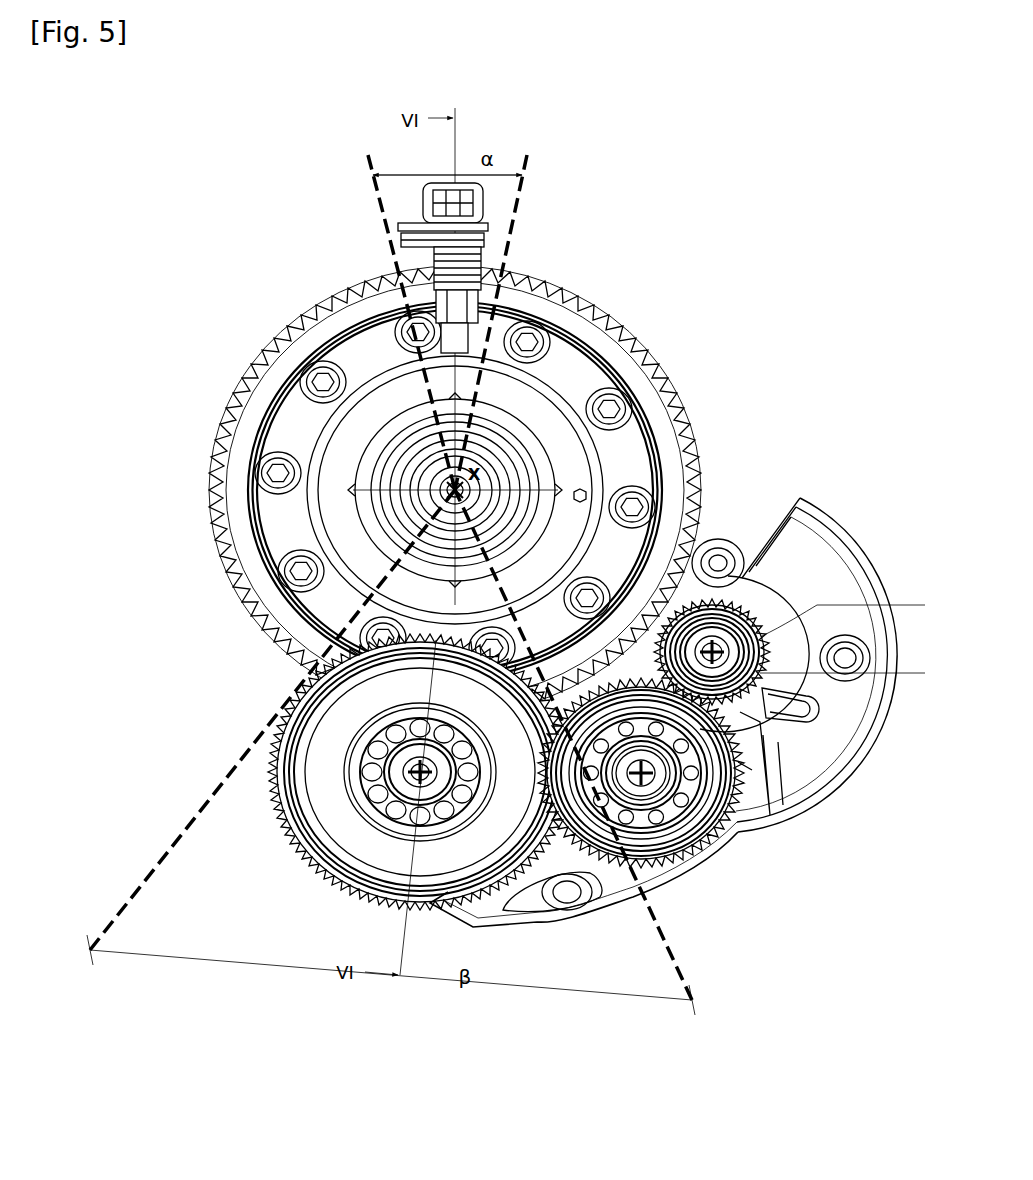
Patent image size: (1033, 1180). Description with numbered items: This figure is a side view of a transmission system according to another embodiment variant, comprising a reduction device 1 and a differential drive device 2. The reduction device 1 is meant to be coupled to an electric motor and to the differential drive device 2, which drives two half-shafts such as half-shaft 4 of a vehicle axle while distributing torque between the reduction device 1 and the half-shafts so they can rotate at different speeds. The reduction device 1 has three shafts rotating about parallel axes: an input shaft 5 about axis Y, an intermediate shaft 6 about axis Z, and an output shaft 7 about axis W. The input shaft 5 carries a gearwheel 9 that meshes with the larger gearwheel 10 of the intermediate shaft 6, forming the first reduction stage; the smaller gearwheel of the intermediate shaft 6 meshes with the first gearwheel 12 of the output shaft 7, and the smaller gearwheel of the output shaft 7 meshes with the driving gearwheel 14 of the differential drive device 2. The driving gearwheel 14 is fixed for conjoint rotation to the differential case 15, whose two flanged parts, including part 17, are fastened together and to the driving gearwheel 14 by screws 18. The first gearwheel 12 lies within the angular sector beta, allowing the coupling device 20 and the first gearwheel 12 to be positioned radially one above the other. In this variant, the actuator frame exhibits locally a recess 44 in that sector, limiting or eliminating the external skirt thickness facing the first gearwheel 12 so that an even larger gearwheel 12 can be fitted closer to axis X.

The reduction device 1 is at (692, 888).
The differential drive device 2 is at (672, 424).
The half-shaft 4 is at (373, 448).
The input shaft 5 is at (798, 677).
The intermediate shaft 6 is at (713, 829).
The output shaft 7 is at (282, 822).
The gearwheel 9 is at (881, 662).
The larger gearwheel 10 is at (642, 884).
The first gearwheel 12 is at (355, 804).
The driving gearwheel 14 is at (246, 426).
The differential case 15 is at (319, 318).
The part of differential case 17 is at (373, 350).
The screws 18 is at (280, 576).
The coupling device 20 is at (564, 500).
The recess 44 is at (302, 646).